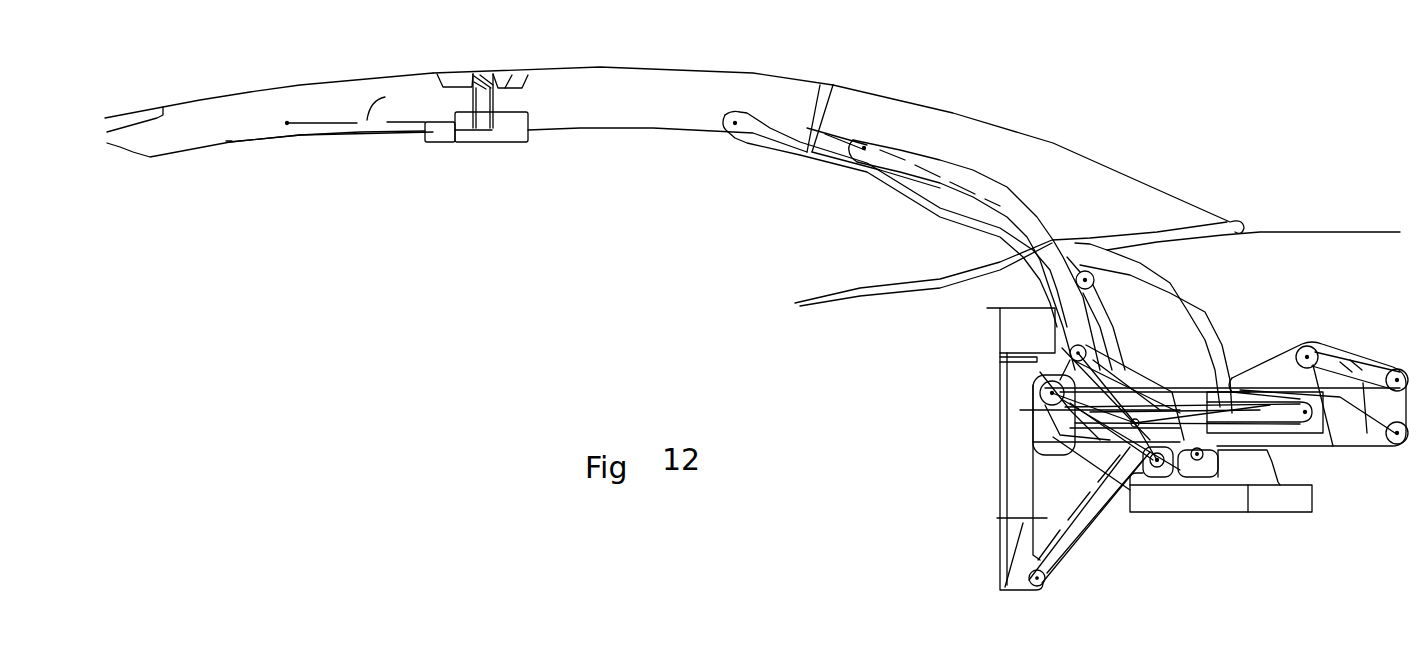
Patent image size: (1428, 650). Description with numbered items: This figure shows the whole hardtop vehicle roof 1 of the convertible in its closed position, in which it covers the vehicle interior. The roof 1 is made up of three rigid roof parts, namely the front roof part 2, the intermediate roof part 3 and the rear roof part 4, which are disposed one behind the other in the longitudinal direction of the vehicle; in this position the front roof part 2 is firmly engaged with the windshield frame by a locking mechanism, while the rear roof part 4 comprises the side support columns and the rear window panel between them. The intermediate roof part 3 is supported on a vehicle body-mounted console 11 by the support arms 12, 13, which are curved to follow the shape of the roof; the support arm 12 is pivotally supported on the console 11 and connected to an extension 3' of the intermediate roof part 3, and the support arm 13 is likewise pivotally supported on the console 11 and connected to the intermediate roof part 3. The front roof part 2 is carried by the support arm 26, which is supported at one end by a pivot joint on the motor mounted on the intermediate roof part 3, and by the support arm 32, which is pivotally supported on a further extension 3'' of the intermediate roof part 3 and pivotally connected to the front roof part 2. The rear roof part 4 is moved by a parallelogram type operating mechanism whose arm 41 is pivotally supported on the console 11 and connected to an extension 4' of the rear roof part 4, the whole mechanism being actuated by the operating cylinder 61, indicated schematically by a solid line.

The hardtop vehicle roof 1 is at (1242, 240).
The front roof part 2 is at (297, 84).
The intermediate roof part 3 is at (633, 82).
The extension of the intermediate roof part 3' is at (903, 154).
The extension of the intermediate roof part 3'' is at (466, 129).
The rear roof part 4 is at (1019, 188).
The extension of the rear roof part 4' is at (1172, 331).
The console 11 is at (1222, 568).
The support arm 12 is at (992, 188).
The support arm 13 is at (868, 177).
The support arm 26 is at (356, 102).
The support arm 32 is at (323, 140).
The parallel arm 41 is at (1343, 353).
The operating cylinder 61 is at (1178, 387).